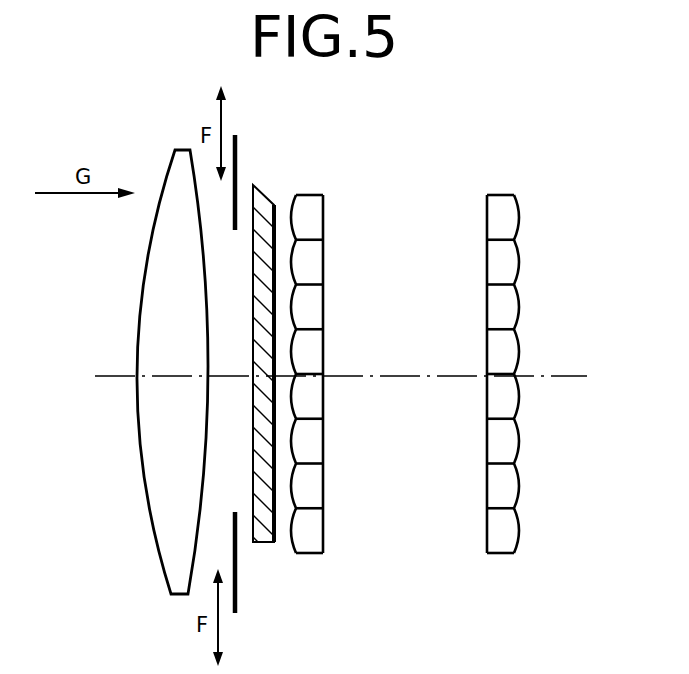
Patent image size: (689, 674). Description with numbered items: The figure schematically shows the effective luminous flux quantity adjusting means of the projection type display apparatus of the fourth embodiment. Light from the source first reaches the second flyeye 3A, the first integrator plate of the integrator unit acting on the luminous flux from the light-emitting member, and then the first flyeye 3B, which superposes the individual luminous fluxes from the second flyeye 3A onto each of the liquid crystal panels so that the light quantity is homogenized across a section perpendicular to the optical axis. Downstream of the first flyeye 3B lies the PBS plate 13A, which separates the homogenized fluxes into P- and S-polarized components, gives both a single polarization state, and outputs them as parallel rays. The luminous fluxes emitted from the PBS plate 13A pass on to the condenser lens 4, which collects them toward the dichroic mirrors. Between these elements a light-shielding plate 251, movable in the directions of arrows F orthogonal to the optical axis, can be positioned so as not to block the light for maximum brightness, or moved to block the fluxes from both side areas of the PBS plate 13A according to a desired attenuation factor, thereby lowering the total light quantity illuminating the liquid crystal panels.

The condenser lens 4 is at (175, 150).
The light-shielding plate 251 is at (236, 142).
The PBS plate 13A is at (256, 188).
The first flyeye 3B is at (324, 195).
The second flyeye 3A is at (514, 195).